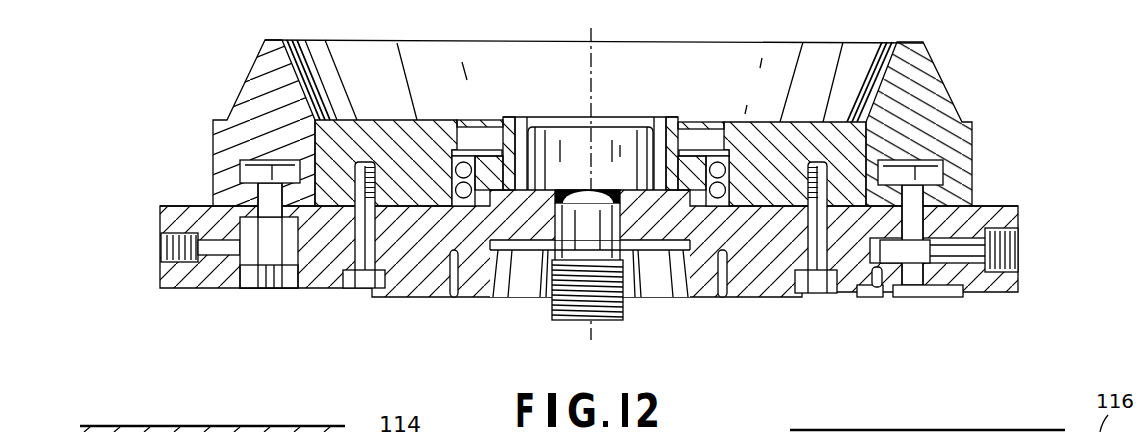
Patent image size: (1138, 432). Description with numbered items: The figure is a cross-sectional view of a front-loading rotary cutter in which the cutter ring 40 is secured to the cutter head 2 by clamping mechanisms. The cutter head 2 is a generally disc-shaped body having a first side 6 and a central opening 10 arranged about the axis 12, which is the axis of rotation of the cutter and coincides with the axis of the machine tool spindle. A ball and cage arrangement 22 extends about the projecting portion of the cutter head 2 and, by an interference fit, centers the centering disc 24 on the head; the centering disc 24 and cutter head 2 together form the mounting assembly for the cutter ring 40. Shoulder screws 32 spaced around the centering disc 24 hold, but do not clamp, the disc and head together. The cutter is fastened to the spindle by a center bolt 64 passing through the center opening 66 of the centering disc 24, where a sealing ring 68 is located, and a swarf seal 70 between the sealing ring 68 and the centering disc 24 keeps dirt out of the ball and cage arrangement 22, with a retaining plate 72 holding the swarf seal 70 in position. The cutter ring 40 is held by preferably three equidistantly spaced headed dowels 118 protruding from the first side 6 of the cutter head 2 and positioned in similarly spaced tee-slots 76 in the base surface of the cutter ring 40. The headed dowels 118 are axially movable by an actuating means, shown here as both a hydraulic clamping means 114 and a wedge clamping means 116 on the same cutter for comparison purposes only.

The cutter head 2 is at (420, 285).
The first side 6 is at (170, 206).
The central opening 10 is at (530, 278).
The axis 12 is at (591, 60).
The ball and cage arrangement 22 is at (407, 117).
The centering disc 24 is at (372, 128).
The shoulder screws 32 is at (815, 297).
The cutter ring 40 is at (975, 108).
The center bolt 64 is at (625, 320).
The center opening 66 is at (660, 120).
The sealing ring 68 is at (678, 120).
The swarf seal 70 is at (488, 120).
The retaining plate 72 is at (730, 120).
The tee-slots 76 is at (213, 142).
The hydraulic clamping means 114 is at (152, 258).
The wedge clamping means 116 is at (1030, 262).
The headed dowels 118 is at (240, 170).